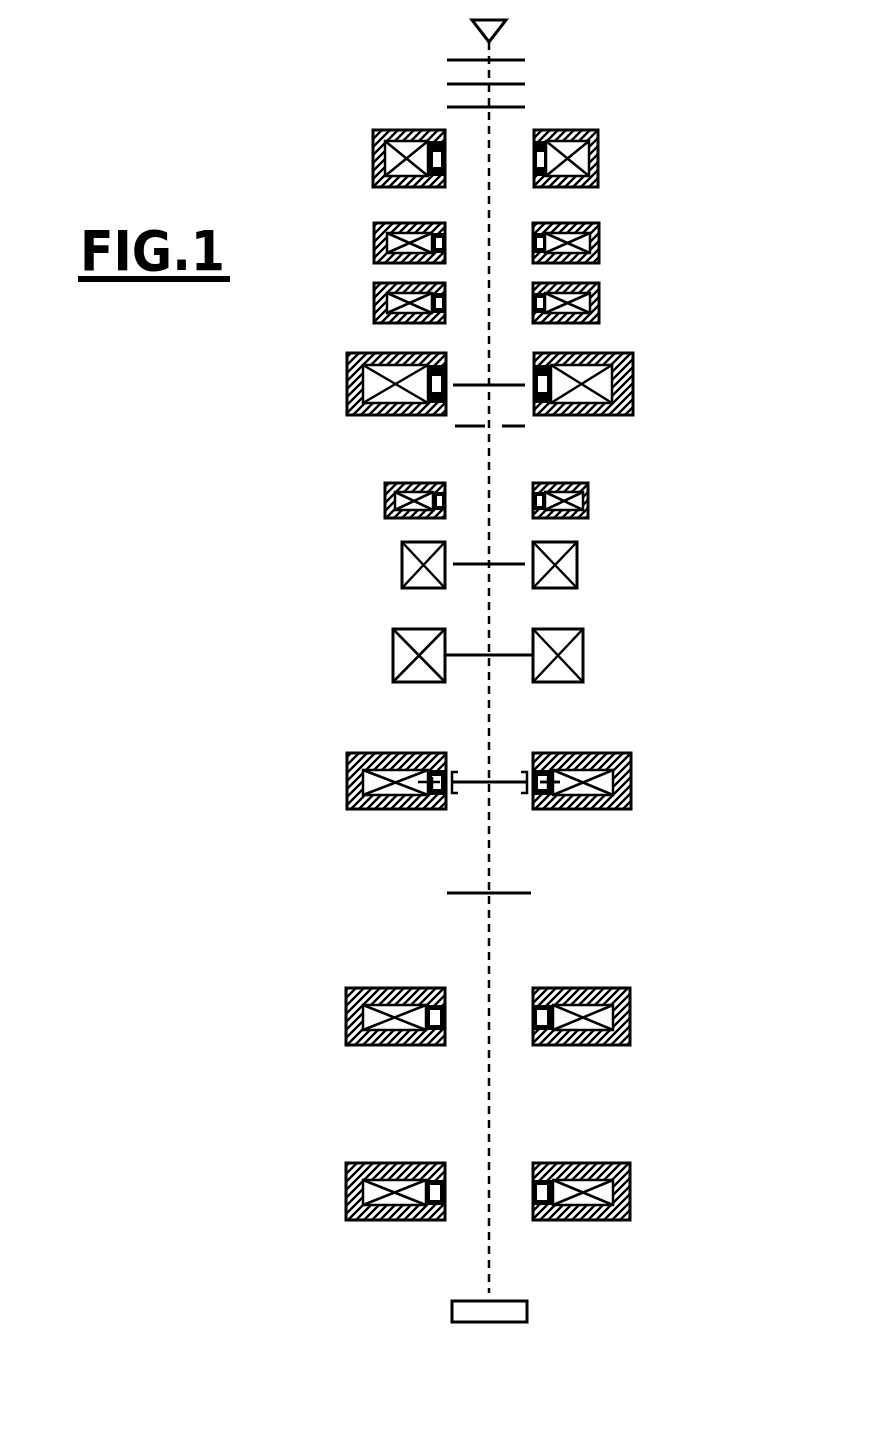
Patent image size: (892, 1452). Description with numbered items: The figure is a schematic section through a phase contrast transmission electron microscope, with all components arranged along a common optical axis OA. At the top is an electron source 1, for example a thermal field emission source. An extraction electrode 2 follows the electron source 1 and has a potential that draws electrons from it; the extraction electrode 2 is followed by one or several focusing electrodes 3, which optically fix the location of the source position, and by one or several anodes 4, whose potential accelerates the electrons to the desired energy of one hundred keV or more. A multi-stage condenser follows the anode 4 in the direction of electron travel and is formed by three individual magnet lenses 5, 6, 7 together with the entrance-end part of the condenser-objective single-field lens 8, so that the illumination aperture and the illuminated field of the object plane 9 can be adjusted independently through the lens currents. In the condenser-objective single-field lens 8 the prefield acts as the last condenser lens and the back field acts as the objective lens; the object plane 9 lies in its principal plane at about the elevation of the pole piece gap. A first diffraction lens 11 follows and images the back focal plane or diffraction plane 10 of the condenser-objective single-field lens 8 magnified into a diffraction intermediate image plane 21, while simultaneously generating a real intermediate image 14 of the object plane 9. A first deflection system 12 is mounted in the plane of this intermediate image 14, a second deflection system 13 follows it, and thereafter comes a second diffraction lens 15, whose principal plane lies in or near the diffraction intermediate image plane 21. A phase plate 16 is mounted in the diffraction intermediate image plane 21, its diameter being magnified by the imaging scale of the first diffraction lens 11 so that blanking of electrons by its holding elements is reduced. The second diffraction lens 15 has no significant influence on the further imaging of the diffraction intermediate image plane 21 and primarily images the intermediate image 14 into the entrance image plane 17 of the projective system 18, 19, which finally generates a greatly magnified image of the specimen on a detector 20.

The electron source 1 is at (500, 30).
The extraction electrode 2 is at (525, 60).
The focusing electrode 3 is at (525, 84).
The anode 4 is at (525, 107).
The magnet lens 5 is at (598, 157).
The magnet lens 6 is at (599, 243).
The magnet lens 7 is at (599, 303).
The condenser-objective single-field lens 8 is at (633, 387).
The object plane 9 is at (503, 385).
The diffraction plane 10 is at (510, 426).
The first diffraction lens 11 is at (588, 500).
The first deflection system 12 is at (577, 565).
The second deflection system 13 is at (583, 652).
The intermediate image 14 is at (510, 564).
The second diffraction lens 15 is at (631, 780).
The phase plate 16 is at (512, 782).
The entrance image plane 17 is at (515, 893).
The projective system lens 18 is at (630, 1015).
The projective system lens 19 is at (630, 1190).
The detector 20 is at (527, 1310).
The diffraction intermediate image plane 21 is at (560, 809).
The optical axis OA is at (490, 1268).